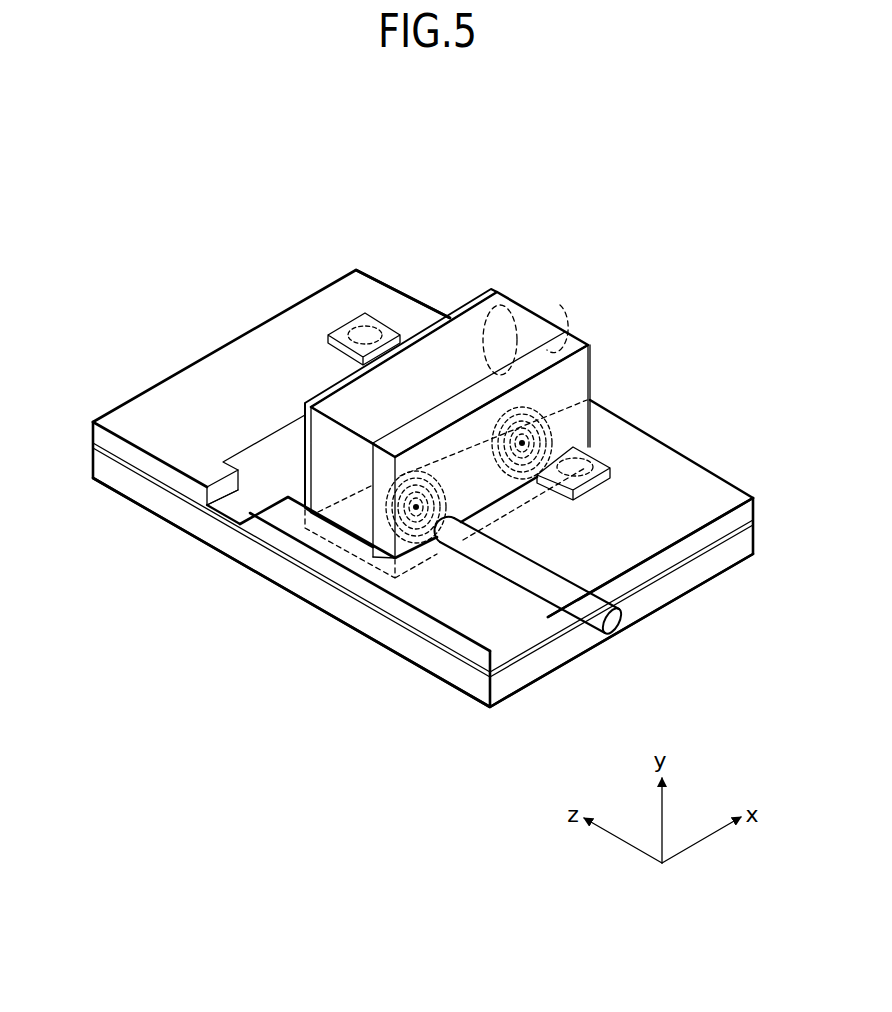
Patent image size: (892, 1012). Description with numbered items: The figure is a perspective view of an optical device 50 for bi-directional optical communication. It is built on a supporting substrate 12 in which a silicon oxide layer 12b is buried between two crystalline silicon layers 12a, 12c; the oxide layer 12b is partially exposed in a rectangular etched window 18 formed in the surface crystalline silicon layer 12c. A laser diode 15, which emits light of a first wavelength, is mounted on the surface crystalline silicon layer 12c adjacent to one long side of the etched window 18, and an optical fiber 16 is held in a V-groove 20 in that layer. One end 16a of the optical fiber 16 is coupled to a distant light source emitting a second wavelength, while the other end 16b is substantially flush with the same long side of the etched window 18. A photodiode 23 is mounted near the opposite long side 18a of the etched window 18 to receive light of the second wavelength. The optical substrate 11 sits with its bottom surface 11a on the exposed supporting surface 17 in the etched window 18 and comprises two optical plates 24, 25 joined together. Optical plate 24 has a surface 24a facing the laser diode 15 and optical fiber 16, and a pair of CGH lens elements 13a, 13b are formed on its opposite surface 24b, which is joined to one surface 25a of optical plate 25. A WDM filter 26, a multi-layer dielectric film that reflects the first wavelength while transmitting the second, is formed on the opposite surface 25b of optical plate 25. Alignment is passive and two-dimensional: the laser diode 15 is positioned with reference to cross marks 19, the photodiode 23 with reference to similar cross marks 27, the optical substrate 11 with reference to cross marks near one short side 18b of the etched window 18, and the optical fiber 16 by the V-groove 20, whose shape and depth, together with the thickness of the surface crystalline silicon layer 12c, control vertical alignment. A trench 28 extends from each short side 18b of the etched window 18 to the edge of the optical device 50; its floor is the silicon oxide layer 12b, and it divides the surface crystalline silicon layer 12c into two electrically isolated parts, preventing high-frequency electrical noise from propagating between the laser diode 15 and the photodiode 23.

The optical device 50 is at (646, 268).
The optical substrate 11 is at (535, 291).
The bottom surface 11a is at (360, 552).
The supporting substrate 12 is at (520, 706).
The crystalline silicon layer 12a is at (460, 693).
The silicon oxide layer 12b is at (412, 642).
The surface crystalline silicon layer 12c is at (283, 548).
The CGH lens element 13a is at (548, 428).
The CGH lens element 13b is at (445, 500).
The laser diode 15 is at (568, 494).
The optical fiber 16 is at (565, 588).
The end of optical fiber 16a is at (617, 633).
The end of optical fiber 16b is at (445, 545).
The supporting surface 17 is at (242, 522).
The etched window 18 is at (280, 476).
The long side of etched window 18a is at (250, 462).
The short side of etched window 18b is at (330, 540).
The cross marks 19 is at (600, 463).
The V-groove 20 is at (490, 566).
The photodiode 23 is at (345, 322).
The optical plate 24 is at (592, 345).
The surface of optical plate 24a is at (585, 375).
The surface of optical plate 24b is at (503, 420).
The optical plate 25 is at (512, 300).
The surface of optical plate 25a is at (560, 317).
The surface of optical plate 25b is at (455, 310).
The WDM filter 26 is at (483, 292).
The cross marks 27 is at (376, 318).
The trench 28 is at (230, 512).